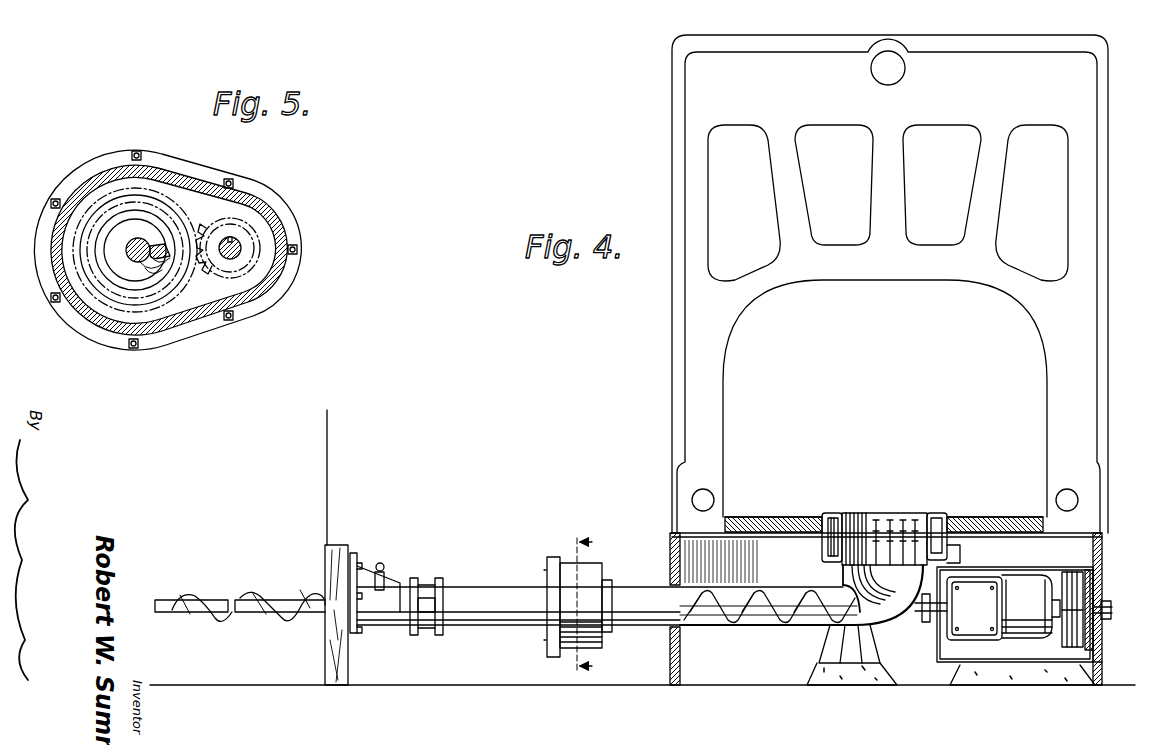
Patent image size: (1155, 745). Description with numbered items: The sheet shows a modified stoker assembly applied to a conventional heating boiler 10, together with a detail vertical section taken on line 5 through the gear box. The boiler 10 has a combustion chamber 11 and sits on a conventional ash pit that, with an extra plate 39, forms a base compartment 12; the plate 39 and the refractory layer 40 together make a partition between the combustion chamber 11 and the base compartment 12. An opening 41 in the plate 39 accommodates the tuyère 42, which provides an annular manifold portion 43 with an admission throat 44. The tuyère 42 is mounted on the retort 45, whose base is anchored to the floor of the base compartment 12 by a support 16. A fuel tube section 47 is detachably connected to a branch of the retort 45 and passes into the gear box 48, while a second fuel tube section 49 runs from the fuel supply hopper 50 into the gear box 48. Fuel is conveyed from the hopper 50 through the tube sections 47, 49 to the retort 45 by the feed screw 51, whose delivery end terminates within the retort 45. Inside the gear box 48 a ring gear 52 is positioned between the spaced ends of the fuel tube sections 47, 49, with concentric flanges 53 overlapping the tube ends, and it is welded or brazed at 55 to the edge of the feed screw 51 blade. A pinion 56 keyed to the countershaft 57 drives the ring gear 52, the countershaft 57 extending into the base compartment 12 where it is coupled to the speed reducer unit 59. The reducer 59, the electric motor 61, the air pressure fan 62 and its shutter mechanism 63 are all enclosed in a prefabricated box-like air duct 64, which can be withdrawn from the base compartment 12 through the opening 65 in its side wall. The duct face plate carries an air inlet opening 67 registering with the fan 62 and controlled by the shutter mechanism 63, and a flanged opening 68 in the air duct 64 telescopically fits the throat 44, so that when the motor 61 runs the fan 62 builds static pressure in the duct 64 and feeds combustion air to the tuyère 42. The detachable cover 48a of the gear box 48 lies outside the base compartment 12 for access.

In FIG. 4, the section line 5 is at (576, 603).
In FIG. 4, the heating boiler 10 is at (669, 398).
In FIG. 4, the combustion chamber 11 is at (742, 460).
In FIG. 4, the base compartment 12 is at (669, 548).
In FIG. 4, the pedestal 16 is at (822, 650).
In FIG. 4, the plate 39 is at (778, 540).
In FIG. 4, the refractory layer 40 is at (774, 517).
In FIG. 4, the opening 41 is at (822, 540).
In FIG. 4, the tuyère 42 is at (885, 514).
In FIG. 4, the annular manifold portion 43 is at (938, 514).
In FIG. 4, the admission throat 44 is at (961, 549).
In FIG. 4, the retort 45 is at (882, 626).
In FIG. 4, the fuel tube section 47 is at (748, 627).
In FIG. 4, the gear box 48 is at (604, 648).
In FIG. 5, the gear box 48 is at (205, 322).
In FIG. 4, the detachable cover 48a is at (547, 574).
In FIG. 4, the second fuel tube section 49 is at (513, 627).
In FIG. 4, the fuel supply hopper 50 is at (331, 486).
In FIG. 4, the feed screw 51 is at (270, 596).
In FIG. 5, the feed screw 51 is at (130, 272).
In FIG. 5, the ring gear 52 is at (250, 312).
In FIG. 5, the concentric flanges 53 is at (155, 298).
In FIG. 5, the weld 55 is at (168, 246).
In FIG. 5, the pinion 56 is at (245, 233).
In FIG. 5, the countershaft 57 is at (240, 255).
In FIG. 4, the speed reducer unit 59 is at (985, 609).
In FIG. 4, the electric motor 61 is at (1038, 603).
In FIG. 4, the air pressure fan 62 is at (1070, 572).
In FIG. 4, the shutter mechanism 63 is at (1102, 618).
In FIG. 4, the air duct 64 is at (955, 668).
In FIG. 4, the opening 65 is at (1100, 662).
In FIG. 4, the air inlet opening 67 is at (1094, 580).
In FIG. 4, the flanged opening 68 is at (965, 570).